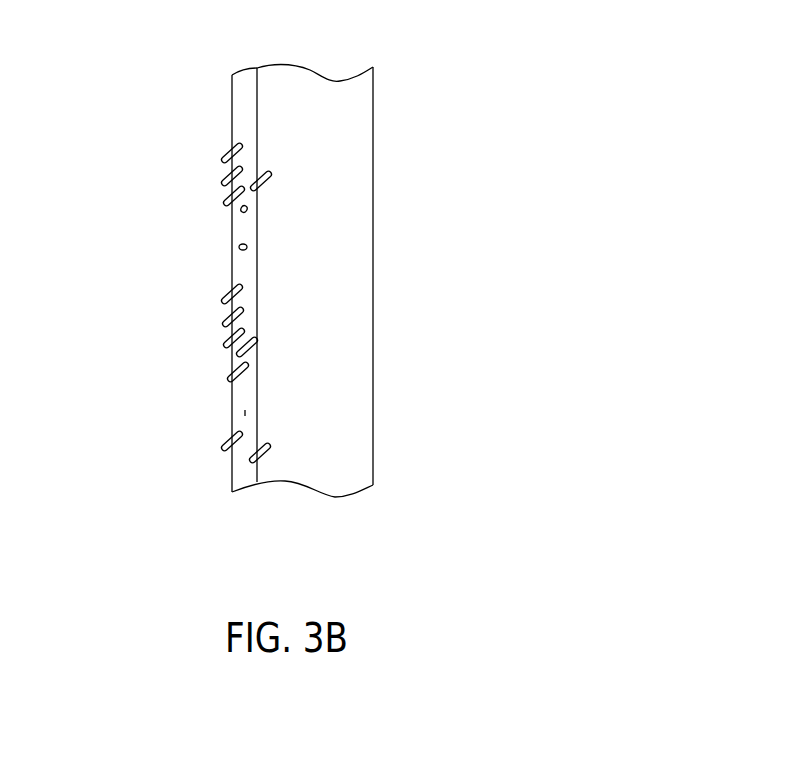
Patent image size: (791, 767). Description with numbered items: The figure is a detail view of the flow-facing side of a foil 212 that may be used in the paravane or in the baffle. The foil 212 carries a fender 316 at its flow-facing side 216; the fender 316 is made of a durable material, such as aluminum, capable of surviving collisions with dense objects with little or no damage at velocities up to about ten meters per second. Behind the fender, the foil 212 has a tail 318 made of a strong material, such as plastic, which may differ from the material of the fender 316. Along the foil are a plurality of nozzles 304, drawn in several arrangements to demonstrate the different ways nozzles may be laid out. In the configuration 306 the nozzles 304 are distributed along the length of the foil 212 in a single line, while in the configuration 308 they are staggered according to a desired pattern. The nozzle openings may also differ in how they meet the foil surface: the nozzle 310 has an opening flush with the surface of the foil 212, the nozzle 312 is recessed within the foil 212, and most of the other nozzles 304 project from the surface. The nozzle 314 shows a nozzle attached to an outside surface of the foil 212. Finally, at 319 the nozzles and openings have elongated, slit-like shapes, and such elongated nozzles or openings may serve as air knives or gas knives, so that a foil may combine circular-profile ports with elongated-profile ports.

The foil 212 is at (409, 53).
The flow-facing side 216 is at (232, 489).
The nozzles 304 is at (231, 150).
The single-line configuration 306 is at (218, 150).
The staggered configuration 308 is at (217, 335).
The flush nozzle 310 is at (245, 212).
The recessed nozzle 312 is at (248, 246).
The attached nozzle 314 is at (268, 178).
The fender 316 is at (245, 77).
The tail 318 is at (310, 465).
The elongated nozzles and openings 319 is at (272, 407).